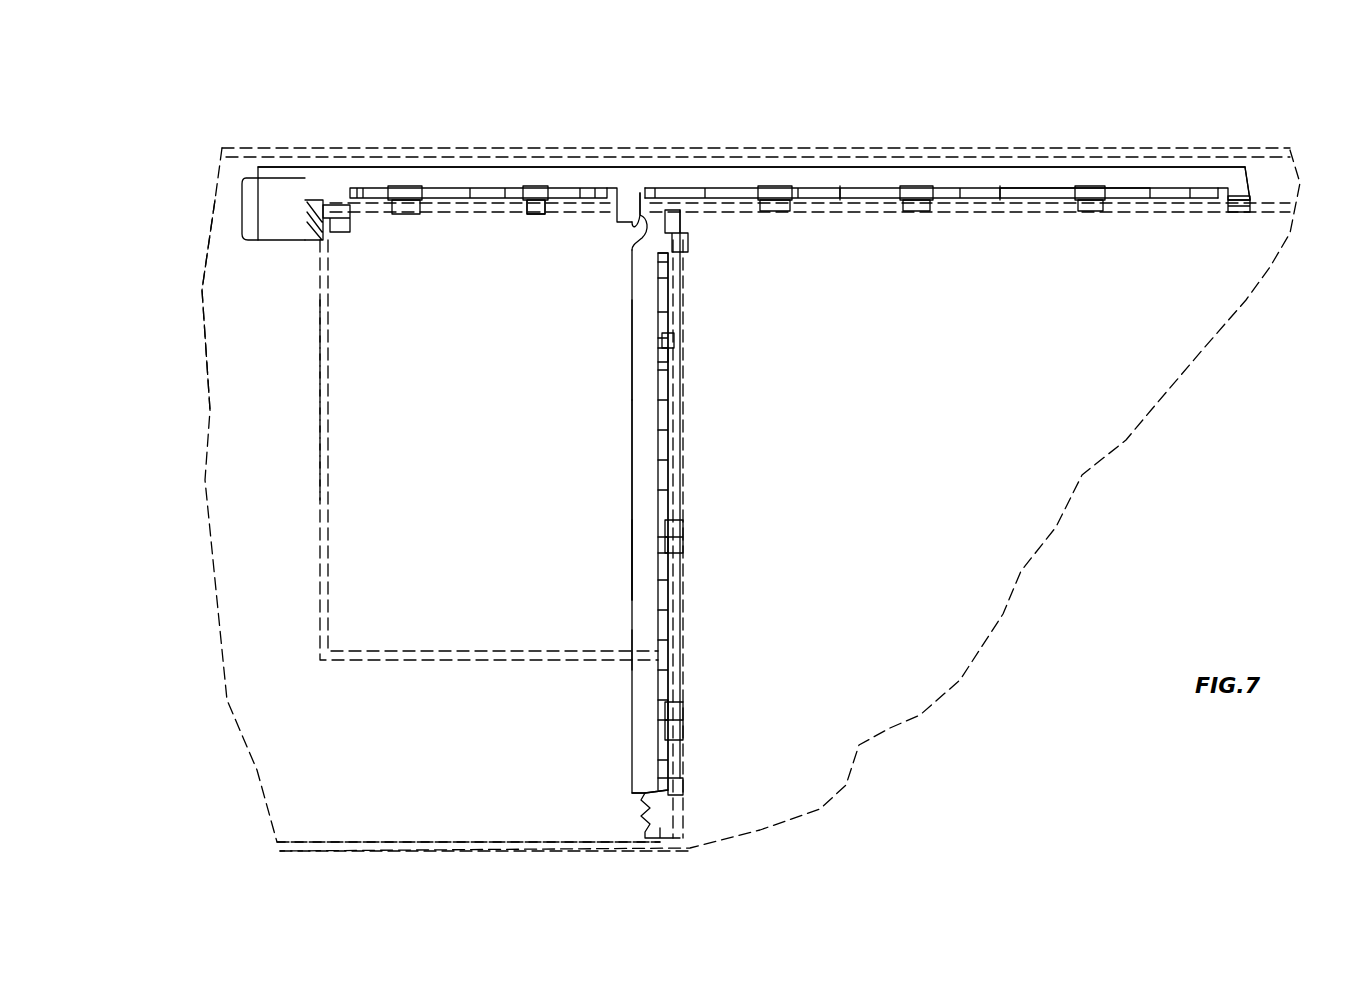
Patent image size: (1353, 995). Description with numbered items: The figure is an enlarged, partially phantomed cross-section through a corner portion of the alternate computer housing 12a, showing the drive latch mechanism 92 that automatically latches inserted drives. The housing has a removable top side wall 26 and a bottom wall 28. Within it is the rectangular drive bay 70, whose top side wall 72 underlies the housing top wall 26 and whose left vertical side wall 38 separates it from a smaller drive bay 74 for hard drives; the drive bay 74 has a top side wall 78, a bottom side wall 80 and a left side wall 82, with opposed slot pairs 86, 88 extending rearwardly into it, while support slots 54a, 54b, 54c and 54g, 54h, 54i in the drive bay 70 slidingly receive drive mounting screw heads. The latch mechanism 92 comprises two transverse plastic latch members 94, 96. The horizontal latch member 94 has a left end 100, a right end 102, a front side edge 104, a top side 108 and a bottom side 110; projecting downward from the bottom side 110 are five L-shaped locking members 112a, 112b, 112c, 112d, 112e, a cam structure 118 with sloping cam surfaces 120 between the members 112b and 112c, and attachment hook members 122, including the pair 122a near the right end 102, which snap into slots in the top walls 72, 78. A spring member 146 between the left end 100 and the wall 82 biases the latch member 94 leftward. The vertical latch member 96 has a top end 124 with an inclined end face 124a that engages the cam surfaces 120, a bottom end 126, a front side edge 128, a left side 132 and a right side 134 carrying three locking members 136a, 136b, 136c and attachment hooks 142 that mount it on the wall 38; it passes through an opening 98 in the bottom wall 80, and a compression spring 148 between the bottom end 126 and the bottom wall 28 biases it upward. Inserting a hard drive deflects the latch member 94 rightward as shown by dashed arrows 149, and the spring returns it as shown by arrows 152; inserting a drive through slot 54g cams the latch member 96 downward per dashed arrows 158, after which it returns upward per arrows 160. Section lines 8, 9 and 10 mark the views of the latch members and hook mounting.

The section line 8- 8 is at (185, 245).
The section line 9- 9 is at (732, 214).
The section line 10- 10 is at (1235, 126).
The computer housing 12a is at (415, 135).
The housing top side wall 26 is at (915, 146).
The housing bottom wall 28 is at (487, 852).
The left vertical side wall 38 is at (685, 414).
The slot 54a is at (780, 214).
The slot 54b is at (926, 212).
The slot 54c is at (1092, 212).
The slot 54g is at (676, 351).
The slot 54h is at (682, 538).
The slot 54i is at (680, 730).
The drive bay 70 is at (1008, 545).
The top side wall 72 is at (850, 212).
The drive bay 74 is at (345, 538).
The top side wall 78 is at (476, 212).
The bottom side wall 80 is at (368, 656).
The left side wall 82 is at (330, 410).
The slot 86 is at (406, 217).
The slot 88 is at (537, 212).
The drive latch mechanism 92 is at (625, 265).
The latch member 94 is at (700, 175).
The latch member 96 is at (640, 498).
The opening 98 is at (632, 648).
The left end 100 is at (250, 213).
The right end 102 is at (1250, 180).
The front side edge 104 is at (985, 176).
The top side 108 is at (1053, 164).
The bottom side 110 is at (1045, 190).
The locking member 112a is at (402, 195).
The locking member 112b is at (535, 195).
The locking member 112c is at (777, 188).
The locking member 112d is at (915, 206).
The locking member 112e is at (1098, 196).
The cam structure 118 is at (626, 190).
The sloping cam surfaces 120 is at (636, 238).
The attachment hook members 122 is at (345, 234).
The attachment hook pair 122a is at (1240, 213).
The top end 124 is at (640, 212).
The inclined end face 124a is at (633, 188).
The bottom end 126 is at (633, 793).
The front side edge 128 is at (650, 545).
The left side 132 is at (630, 345).
The right side 134 is at (666, 332).
The locking member 136a is at (665, 362).
The locking member 136b is at (665, 548).
The locking member 136c is at (668, 723).
The attachment hooks 142 is at (690, 248).
The spring member 146 is at (310, 240).
The compression spring member 148 is at (648, 818).
The dashed arrows 149 is at (465, 108).
The arrows 152 is at (905, 92).
The dashed arrows 158 is at (600, 455).
The arrows 160 is at (705, 528).